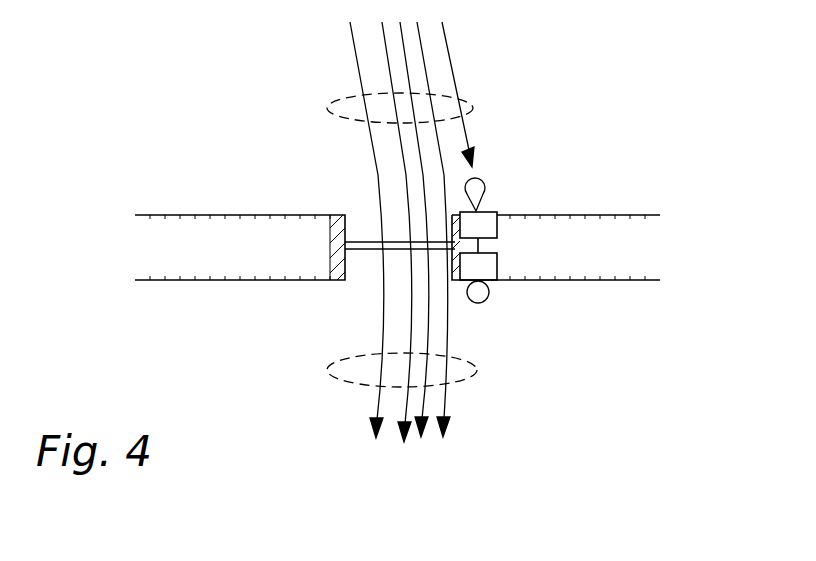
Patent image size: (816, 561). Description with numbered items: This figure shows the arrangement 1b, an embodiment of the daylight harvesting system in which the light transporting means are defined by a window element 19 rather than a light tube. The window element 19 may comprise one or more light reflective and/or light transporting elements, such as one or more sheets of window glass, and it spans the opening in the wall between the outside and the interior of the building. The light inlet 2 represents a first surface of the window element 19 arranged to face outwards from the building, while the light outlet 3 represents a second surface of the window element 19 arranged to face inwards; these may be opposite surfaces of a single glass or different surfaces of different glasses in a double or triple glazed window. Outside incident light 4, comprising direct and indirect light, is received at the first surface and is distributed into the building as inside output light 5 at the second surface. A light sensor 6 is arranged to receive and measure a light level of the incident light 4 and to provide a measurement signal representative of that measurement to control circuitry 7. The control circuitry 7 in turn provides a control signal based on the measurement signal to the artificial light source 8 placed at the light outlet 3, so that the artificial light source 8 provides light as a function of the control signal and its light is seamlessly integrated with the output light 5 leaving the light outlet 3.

The arrangement 1b is at (590, 116).
The light inlet 2 is at (357, 218).
The light outlet 3 is at (360, 280).
The incident light 4 is at (314, 114).
The output light 5 is at (318, 377).
The light sensor 6 is at (493, 185).
The control circuitry 7 is at (497, 217).
The artificial light source 8 is at (489, 296).
The window element 19 is at (345, 246).